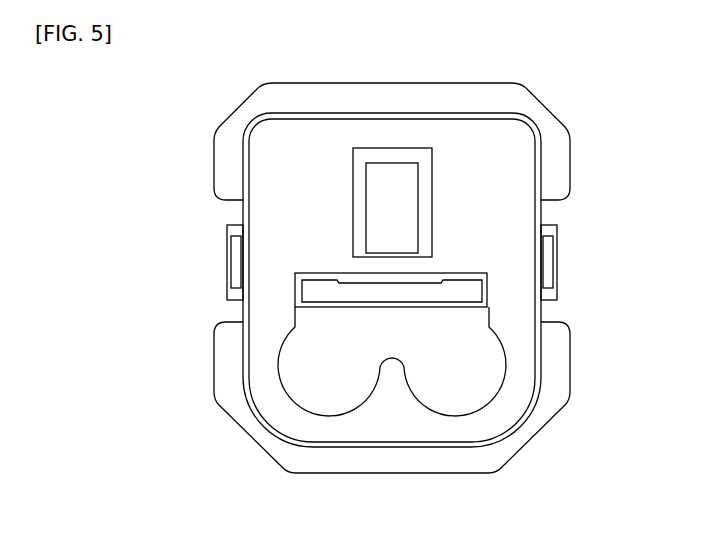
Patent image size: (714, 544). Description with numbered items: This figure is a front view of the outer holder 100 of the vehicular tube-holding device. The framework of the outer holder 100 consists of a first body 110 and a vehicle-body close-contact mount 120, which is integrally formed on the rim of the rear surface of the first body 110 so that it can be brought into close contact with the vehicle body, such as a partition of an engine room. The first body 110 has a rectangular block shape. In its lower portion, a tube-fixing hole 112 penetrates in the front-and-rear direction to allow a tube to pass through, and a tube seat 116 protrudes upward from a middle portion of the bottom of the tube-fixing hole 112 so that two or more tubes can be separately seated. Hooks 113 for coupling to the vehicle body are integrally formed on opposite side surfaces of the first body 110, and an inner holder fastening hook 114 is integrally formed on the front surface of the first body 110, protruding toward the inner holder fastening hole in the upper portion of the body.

The outer holder 100 is at (180, 306).
The first body 110 is at (230, 354).
The tube-fixing hole 112 is at (314, 408).
The hooks 113 is at (227, 257).
The inner holder fastening hook 114 is at (379, 178).
The tube seat 116 is at (391, 368).
The vehicle-body close-contact mount 120 is at (562, 187).